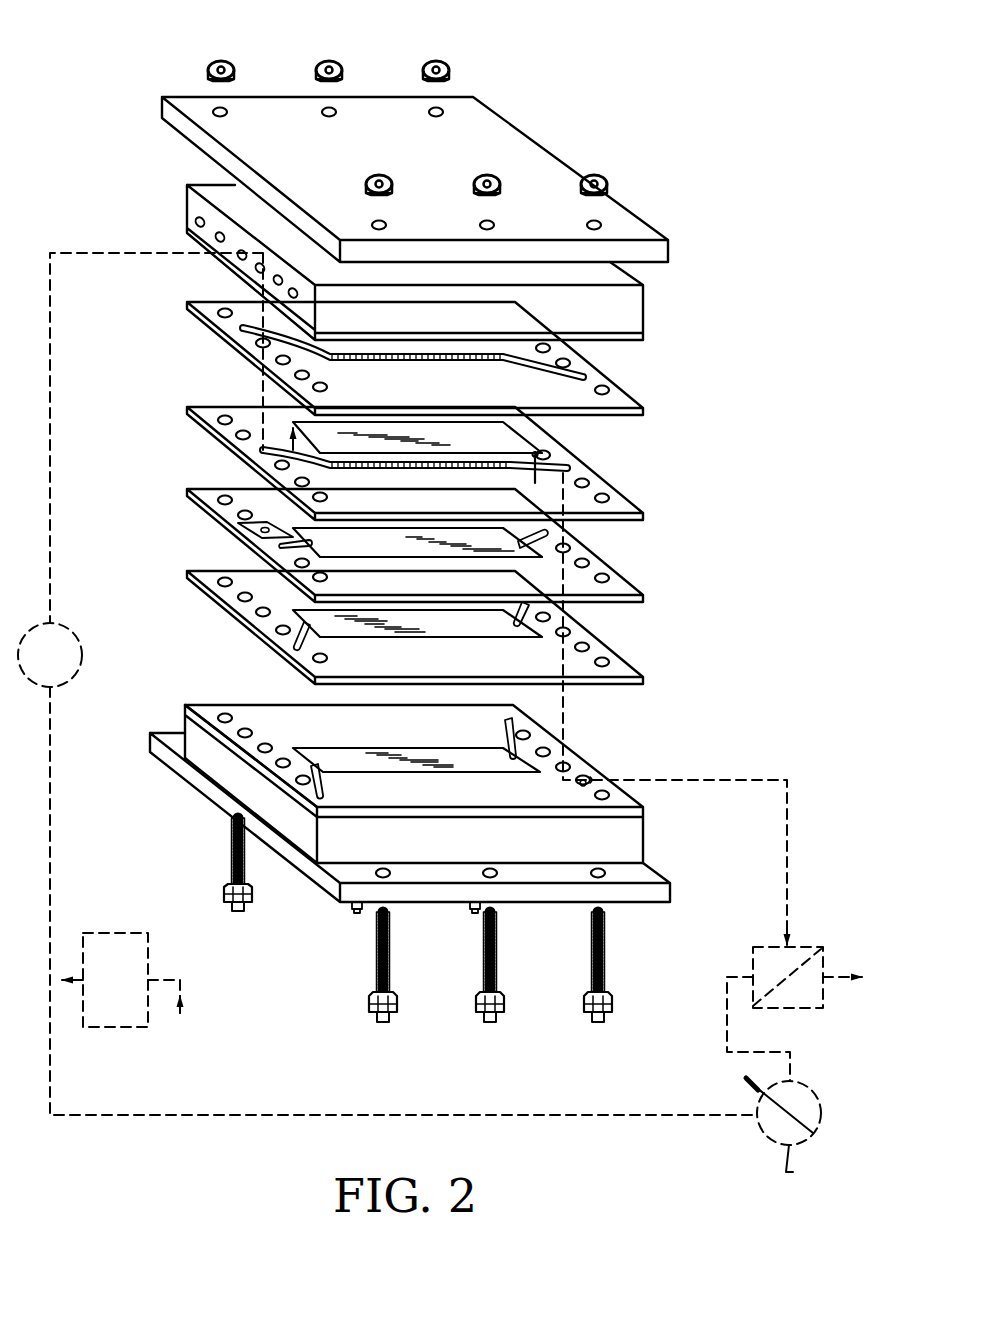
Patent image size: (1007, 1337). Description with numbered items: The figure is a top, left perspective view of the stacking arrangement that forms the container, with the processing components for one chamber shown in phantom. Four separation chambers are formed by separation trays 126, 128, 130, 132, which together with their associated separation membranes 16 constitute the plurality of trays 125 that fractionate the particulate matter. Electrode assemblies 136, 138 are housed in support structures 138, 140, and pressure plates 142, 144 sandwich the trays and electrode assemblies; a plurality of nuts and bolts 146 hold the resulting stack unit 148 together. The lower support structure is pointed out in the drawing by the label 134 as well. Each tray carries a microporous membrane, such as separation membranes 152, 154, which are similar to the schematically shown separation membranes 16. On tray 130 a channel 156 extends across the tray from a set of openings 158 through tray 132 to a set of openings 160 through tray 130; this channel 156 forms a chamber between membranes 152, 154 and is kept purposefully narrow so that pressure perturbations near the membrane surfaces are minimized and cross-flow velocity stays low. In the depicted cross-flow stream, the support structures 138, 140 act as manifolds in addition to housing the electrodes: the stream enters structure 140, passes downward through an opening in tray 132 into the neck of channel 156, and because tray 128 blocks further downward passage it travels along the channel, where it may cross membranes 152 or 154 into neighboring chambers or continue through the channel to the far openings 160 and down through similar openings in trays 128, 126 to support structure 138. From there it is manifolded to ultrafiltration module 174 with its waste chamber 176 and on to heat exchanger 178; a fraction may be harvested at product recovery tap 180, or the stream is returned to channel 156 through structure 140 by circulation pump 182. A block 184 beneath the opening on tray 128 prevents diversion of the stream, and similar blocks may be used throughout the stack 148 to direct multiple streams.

The separation membranes 16 is at (140, 417).
The plurality of trays 125 is at (725, 472).
The separation tray 126 is at (454, 627).
The separation tray 128 is at (446, 545).
The separation tray 130 is at (447, 443).
The separation tray 132 is at (642, 385).
The lower block 134 is at (396, 784).
The electrode assembly 136 is at (439, 245).
The support structure 138 is at (207, 752).
The support structure 140 is at (190, 192).
The pressure plate 142 is at (328, 883).
The pressure plate 144 is at (277, 108).
The nuts and bolts 146 is at (363, 985).
The stack unit 148 is at (168, 515).
The separation membrane 152 is at (293, 613).
The separation membrane 154 is at (313, 430).
The channel 156 is at (458, 468).
The set of openings 158 is at (329, 497).
The set of openings 160 is at (613, 463).
The ultrafiltration module 174 is at (763, 943).
The waste chamber 176 is at (840, 923).
The heat exchanger 178 is at (790, 1134).
The product recovery tap 180 is at (125, 1027).
The circulation pump 182 is at (386, 684).
The block 184 is at (238, 530).